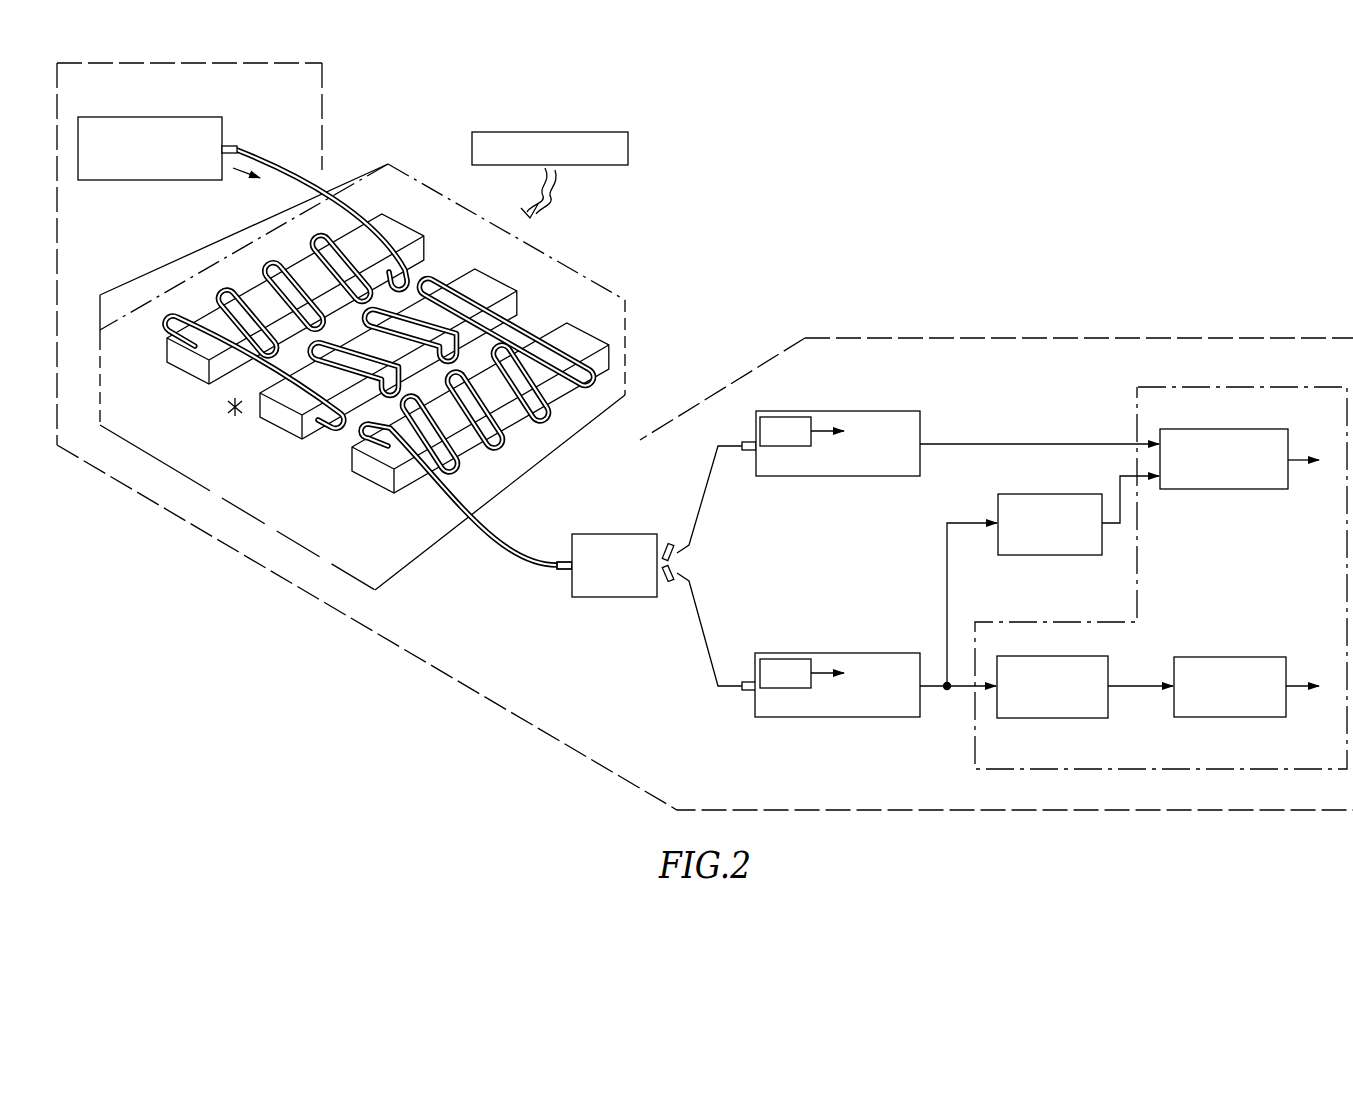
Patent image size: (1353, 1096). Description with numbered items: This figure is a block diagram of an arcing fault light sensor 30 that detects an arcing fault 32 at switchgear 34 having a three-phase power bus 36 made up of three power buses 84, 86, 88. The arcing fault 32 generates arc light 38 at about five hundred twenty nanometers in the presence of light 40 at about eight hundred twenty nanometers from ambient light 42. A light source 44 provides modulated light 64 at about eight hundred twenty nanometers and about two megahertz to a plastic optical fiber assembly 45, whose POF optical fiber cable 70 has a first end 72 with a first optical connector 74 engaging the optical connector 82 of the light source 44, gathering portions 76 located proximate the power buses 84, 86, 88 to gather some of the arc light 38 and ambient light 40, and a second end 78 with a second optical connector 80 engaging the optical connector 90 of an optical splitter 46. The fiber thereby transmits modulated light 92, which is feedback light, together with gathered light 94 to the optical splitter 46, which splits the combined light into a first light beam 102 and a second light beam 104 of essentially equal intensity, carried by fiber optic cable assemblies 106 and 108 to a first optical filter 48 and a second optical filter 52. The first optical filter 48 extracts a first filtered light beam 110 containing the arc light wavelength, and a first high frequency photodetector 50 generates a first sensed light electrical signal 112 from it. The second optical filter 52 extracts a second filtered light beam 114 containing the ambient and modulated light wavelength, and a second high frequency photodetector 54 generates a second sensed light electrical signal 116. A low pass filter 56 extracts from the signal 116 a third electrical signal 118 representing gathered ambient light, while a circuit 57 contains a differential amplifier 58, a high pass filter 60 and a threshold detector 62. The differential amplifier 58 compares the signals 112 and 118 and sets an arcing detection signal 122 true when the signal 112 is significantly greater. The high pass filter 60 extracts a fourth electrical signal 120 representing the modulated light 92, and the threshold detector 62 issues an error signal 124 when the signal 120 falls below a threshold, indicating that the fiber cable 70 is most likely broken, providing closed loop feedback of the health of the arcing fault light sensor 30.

The arcing fault light sensor 30 is at (1166, 335).
The arcing fault 32 is at (226, 411).
The switchgear 34 is at (614, 291).
The three-phase power bus 36 is at (525, 433).
The arc light 38 is at (252, 374).
The light 40 is at (548, 201).
The ambient light 42 is at (600, 132).
The light source 44 is at (108, 117).
The plastic optical fiber assembly 45 is at (507, 561).
The optical splitter 46 is at (613, 597).
The first optical filter 48 is at (788, 447).
The first high frequency photodetector 50 is at (848, 446).
The second optical filter 52 is at (797, 688).
The second high frequency photodetector 54 is at (837, 684).
The low pass filter 56 is at (1027, 557).
The circuit 57 is at (1258, 386).
The differential amplifier 58 is at (1197, 492).
The high pass filter 60 is at (1023, 720).
The threshold detector 62 is at (1208, 655).
The modulated light 64 is at (241, 180).
The POF optical fiber cable 70 is at (379, 359).
The first end 72 is at (247, 129).
The first optical connector 74 is at (241, 150).
The gathering portions 76 is at (403, 234).
The second end 78 is at (540, 580).
The second optical connector 80 is at (562, 573).
The optical connector 82 is at (234, 143).
The power bus 84 is at (167, 357).
The power bus 86 is at (283, 432).
The power bus 88 is at (363, 481).
The optical connector 90 is at (565, 560).
The modulated light 92 is at (463, 522).
The gathered light 94 is at (488, 513).
The first light beam 102 is at (719, 486).
The second light beam 104 is at (708, 600).
The fiber optic cable assembly 106 is at (711, 472).
The fiber optic cable assembly 108 is at (708, 658).
The first filtered light beam 110 is at (825, 423).
The first sensed light electrical signal 112 is at (1032, 442).
The second filtered light beam 114 is at (822, 668).
The second sensed light electrical signal 116 is at (933, 690).
The third electrical signal 118 is at (1120, 482).
The fourth electrical signal 120 is at (1133, 682).
The arcing detection signal 122 is at (1300, 463).
The error signal 124 is at (1300, 680).